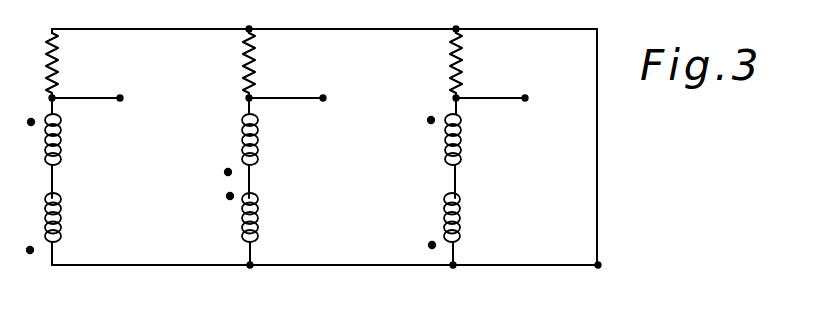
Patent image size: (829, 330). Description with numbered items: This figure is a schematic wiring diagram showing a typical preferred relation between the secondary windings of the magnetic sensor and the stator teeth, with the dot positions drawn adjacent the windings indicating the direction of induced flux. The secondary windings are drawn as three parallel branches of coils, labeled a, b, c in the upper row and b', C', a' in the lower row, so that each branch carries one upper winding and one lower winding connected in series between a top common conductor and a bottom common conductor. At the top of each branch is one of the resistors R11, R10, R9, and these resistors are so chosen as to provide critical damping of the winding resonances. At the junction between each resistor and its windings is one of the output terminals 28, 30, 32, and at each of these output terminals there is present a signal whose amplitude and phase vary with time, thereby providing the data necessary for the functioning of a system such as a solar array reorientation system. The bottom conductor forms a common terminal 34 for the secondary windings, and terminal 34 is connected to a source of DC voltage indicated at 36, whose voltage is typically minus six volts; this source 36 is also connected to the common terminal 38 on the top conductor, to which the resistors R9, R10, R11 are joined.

The output terminal 28 is at (120, 98).
The output terminal 30 is at (323, 98).
The output terminal 32 is at (525, 98).
The common terminal 34 is at (453, 265).
The source of DC voltage 36 is at (598, 265).
The common terminal 38 is at (456, 29).
The resistor R9 is at (474, 65).
The resistor R10 is at (275, 65).
The resistor R11 is at (75, 65).
The winding a is at (54, 145).
The winding b is at (254, 145).
The winding c is at (457, 145).
The winding a prime a' is at (459, 228).
The winding b prime b' is at (58, 228).
The winding c prime C' is at (259, 228).